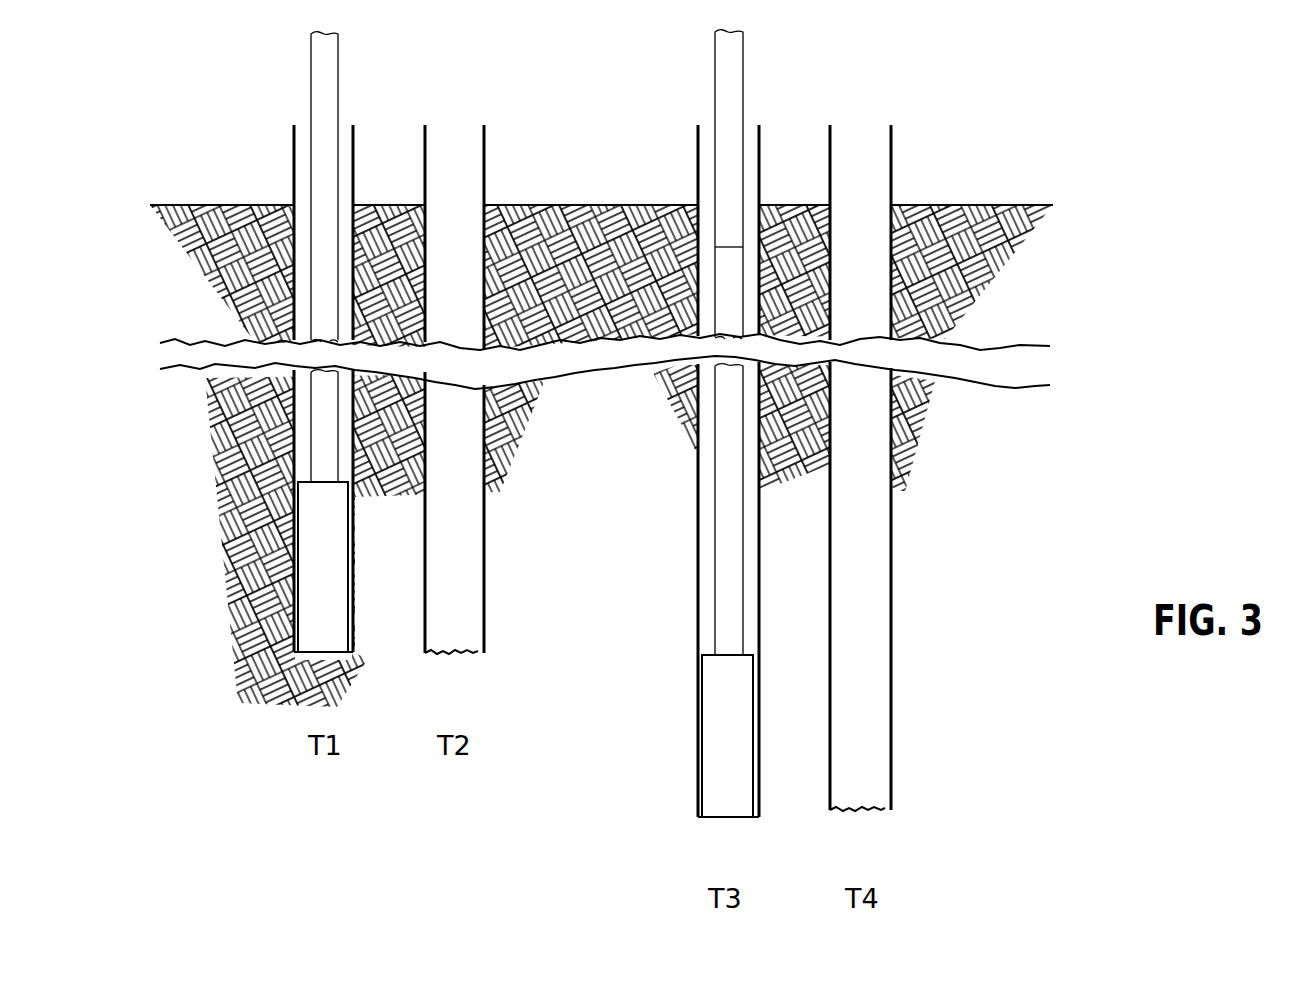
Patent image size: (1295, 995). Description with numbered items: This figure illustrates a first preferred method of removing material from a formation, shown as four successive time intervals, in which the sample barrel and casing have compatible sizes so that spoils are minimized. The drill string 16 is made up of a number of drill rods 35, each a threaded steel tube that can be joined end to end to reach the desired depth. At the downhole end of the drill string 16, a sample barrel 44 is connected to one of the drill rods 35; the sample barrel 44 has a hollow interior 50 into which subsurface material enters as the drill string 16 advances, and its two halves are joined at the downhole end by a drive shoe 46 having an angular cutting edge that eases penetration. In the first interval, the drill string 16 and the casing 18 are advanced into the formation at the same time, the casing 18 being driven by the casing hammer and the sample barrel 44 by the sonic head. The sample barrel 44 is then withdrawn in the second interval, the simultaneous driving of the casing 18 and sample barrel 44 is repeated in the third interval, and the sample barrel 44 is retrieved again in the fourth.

The drill string 16 is at (320, 72).
The casing 18 is at (293, 157).
The drill rod 35 is at (725, 97).
The sample barrel 44 is at (325, 563).
The drive shoe 46 is at (350, 655).
The hollow interior 50 is at (313, 640).